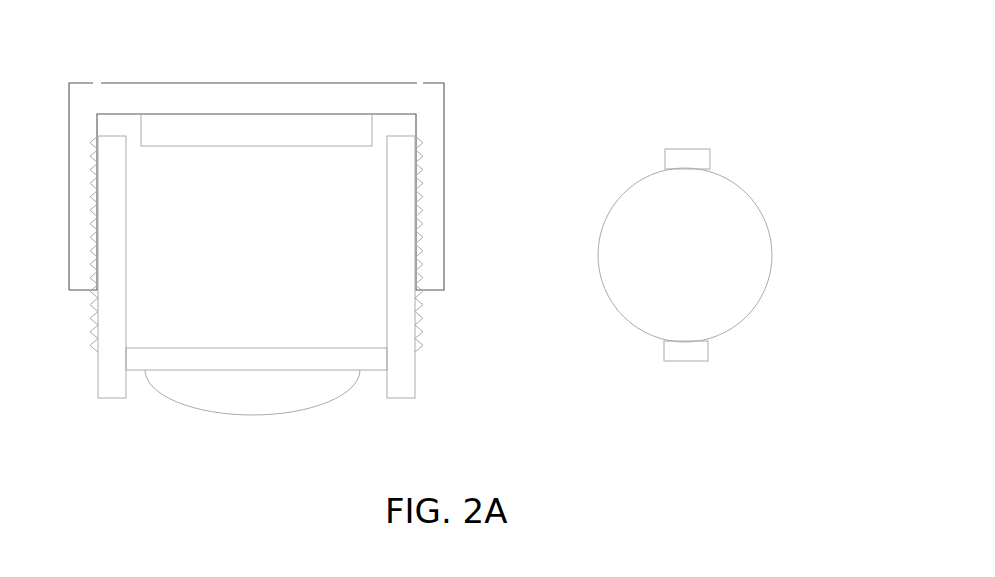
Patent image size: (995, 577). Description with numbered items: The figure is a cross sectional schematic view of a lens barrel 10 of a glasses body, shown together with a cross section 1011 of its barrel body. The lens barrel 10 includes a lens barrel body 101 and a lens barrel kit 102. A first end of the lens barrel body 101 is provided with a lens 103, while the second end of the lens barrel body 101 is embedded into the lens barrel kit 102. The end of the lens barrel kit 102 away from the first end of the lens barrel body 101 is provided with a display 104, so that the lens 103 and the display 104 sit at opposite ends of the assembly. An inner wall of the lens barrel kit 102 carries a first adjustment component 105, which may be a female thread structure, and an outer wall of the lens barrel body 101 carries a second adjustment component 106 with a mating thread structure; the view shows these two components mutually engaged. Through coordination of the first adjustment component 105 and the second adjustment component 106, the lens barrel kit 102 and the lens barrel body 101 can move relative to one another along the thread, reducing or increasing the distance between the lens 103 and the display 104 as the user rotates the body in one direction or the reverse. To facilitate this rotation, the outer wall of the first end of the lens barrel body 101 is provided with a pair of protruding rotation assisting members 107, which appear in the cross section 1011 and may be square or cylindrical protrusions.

The lens barrel 10 is at (343, 47).
The lens barrel body 101 is at (415, 370).
The cross section of the lens barrel body 1011 is at (765, 292).
The lens barrel kit 102 is at (444, 207).
The lens 103 is at (257, 415).
The display 104 is at (257, 146).
The first adjustment component 105 is at (93, 280).
The second adjustment component 106 is at (93, 332).
The rotation assisting member 107 is at (700, 149).